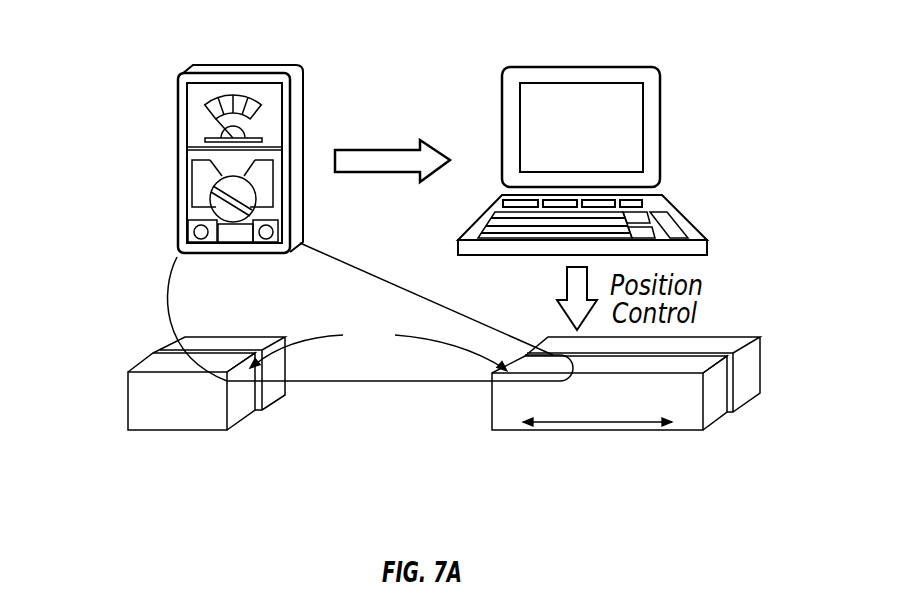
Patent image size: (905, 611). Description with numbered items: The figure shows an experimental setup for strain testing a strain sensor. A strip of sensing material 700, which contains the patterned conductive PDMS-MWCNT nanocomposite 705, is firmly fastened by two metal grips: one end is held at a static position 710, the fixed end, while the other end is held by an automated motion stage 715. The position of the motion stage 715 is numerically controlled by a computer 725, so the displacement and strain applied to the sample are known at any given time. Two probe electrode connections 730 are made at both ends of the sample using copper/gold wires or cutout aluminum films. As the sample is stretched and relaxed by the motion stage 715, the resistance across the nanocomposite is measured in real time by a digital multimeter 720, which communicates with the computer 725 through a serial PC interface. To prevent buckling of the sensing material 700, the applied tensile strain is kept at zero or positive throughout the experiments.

The sensing material 700 is at (347, 387).
The patterned conductive PDMS-MWCNT nanocomposite 705 is at (447, 370).
The static position 710 is at (148, 398).
The automated motion stage 715 is at (687, 405).
The digital multimeter 720 is at (182, 117).
The computer 725 is at (637, 100).
The probe electrode connections 730 is at (378, 348).